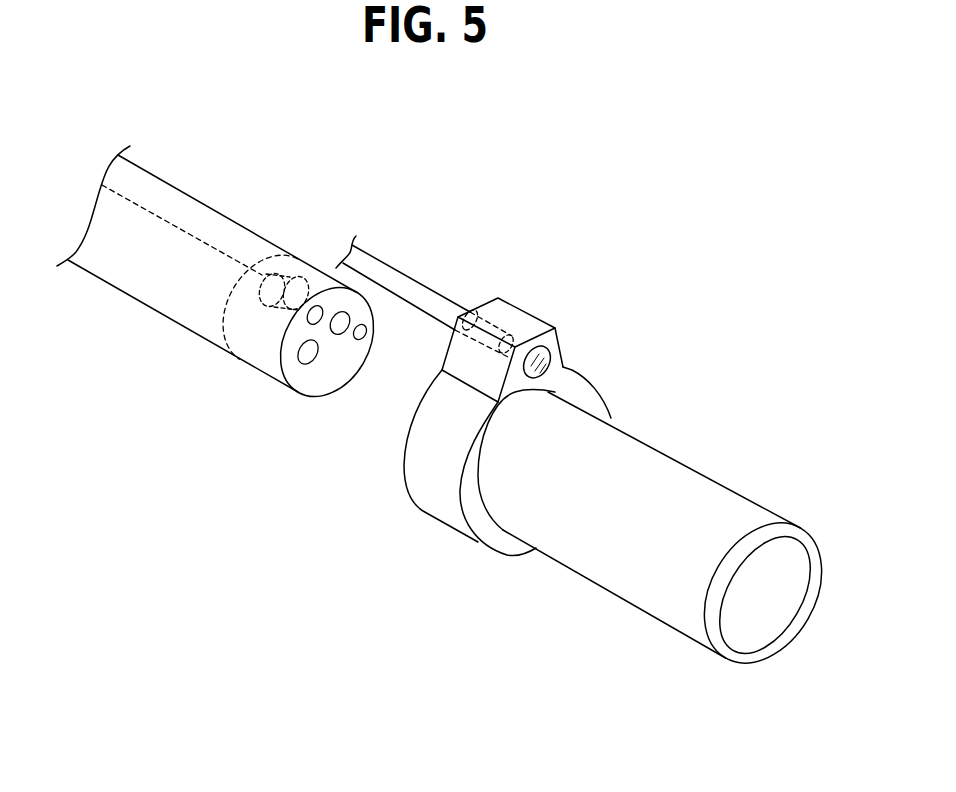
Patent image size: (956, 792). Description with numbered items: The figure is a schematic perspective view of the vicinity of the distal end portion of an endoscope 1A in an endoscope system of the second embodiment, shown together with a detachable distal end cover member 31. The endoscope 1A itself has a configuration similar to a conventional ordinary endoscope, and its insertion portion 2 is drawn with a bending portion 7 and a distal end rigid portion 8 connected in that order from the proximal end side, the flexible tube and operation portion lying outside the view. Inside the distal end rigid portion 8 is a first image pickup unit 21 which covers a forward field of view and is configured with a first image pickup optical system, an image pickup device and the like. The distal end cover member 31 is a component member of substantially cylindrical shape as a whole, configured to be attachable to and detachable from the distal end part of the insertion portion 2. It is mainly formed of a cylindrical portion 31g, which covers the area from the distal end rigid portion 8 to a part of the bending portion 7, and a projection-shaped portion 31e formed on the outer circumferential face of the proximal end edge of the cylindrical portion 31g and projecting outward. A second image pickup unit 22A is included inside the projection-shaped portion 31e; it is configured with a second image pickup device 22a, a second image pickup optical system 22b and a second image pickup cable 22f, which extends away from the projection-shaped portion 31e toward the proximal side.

The endoscope 1A is at (117, 423).
The insertion portion 2 is at (43, 298).
The bending portion 7 is at (161, 304).
The distal end rigid portion 8 is at (262, 360).
The first image pickup unit 21 is at (288, 272).
The second image pickup cable 22f is at (410, 292).
The second image pickup unit 22A is at (493, 222).
The second image pickup device 22a is at (502, 297).
The second image pickup optical system 22b is at (553, 350).
The distal end cover member 31 is at (691, 292).
The projection-shaped portion 31e is at (527, 314).
The cylindrical portion 31g is at (687, 470).